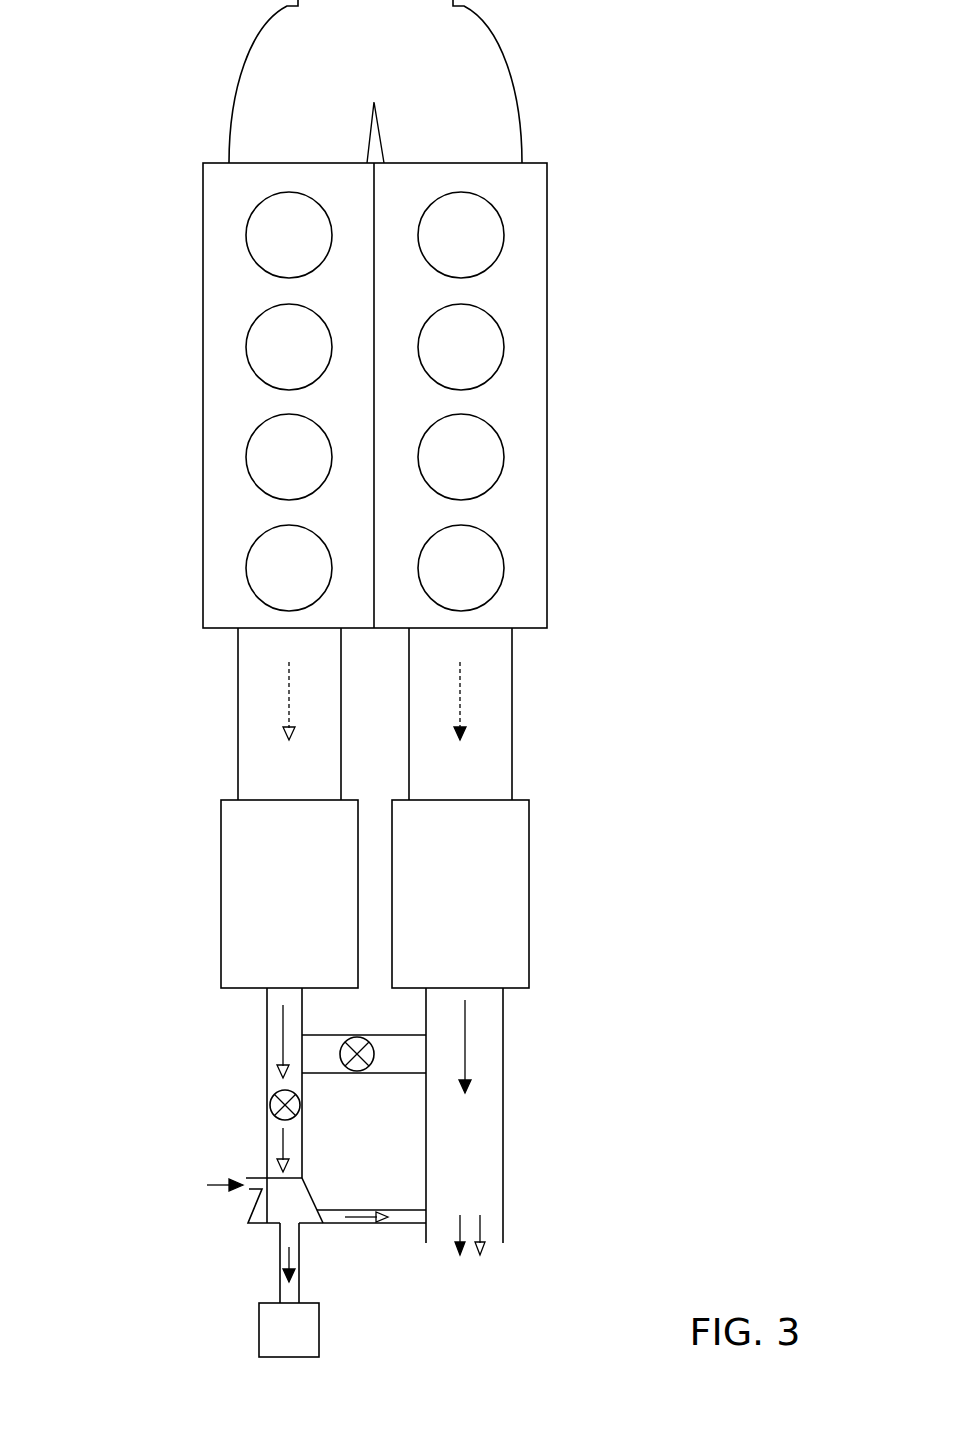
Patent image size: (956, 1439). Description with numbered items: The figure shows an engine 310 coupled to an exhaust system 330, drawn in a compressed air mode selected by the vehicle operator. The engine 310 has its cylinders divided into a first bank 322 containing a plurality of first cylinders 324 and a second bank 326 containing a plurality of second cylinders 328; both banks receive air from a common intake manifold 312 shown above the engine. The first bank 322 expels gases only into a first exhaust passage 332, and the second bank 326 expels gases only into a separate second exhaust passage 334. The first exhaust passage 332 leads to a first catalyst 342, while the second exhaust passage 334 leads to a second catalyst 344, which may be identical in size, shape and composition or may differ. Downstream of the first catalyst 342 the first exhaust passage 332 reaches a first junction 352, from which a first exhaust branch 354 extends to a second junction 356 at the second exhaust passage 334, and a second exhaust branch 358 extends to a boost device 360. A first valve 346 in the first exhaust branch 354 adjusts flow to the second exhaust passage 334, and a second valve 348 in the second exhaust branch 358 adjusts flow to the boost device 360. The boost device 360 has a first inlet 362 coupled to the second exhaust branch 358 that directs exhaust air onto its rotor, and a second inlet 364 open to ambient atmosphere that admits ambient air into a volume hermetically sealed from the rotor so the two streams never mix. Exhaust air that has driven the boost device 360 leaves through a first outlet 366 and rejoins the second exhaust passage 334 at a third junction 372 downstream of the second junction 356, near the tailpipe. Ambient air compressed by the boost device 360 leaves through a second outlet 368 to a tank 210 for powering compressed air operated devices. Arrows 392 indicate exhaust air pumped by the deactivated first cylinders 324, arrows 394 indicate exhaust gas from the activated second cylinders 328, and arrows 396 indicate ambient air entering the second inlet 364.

The tank 210 is at (272, 1345).
The engine 310 is at (341, 314).
The common intake manifold 312 is at (360, 83).
The first bank 322 is at (203, 272).
The first cylinder 324 is at (247, 572).
The second bank 326 is at (547, 260).
The second cylinder 328 is at (504, 568).
The exhaust system 330 is at (456, 704).
The first exhaust passage 332 is at (237, 748).
The second exhaust passage 334 is at (512, 763).
The first catalyst 342 is at (272, 909).
The second catalyst 344 is at (443, 909).
The first valve 346 is at (352, 1072).
The second valve 348 is at (270, 1107).
The first junction 352 is at (275, 1050).
The first exhaust branch 354 is at (382, 1035).
The second junction 356 is at (427, 1057).
The second exhaust branch 358 is at (302, 1137).
The boost device 360 is at (288, 1199).
The first inlet 362 is at (280, 1178).
The second inlet 364 is at (253, 1190).
The first outlet 366 is at (343, 1226).
The second outlet 368 is at (280, 1288).
The third junction 372 is at (430, 1218).
The arrows 392 is at (288, 676).
The arrows 394 is at (461, 694).
The arrows 396 is at (223, 1182).